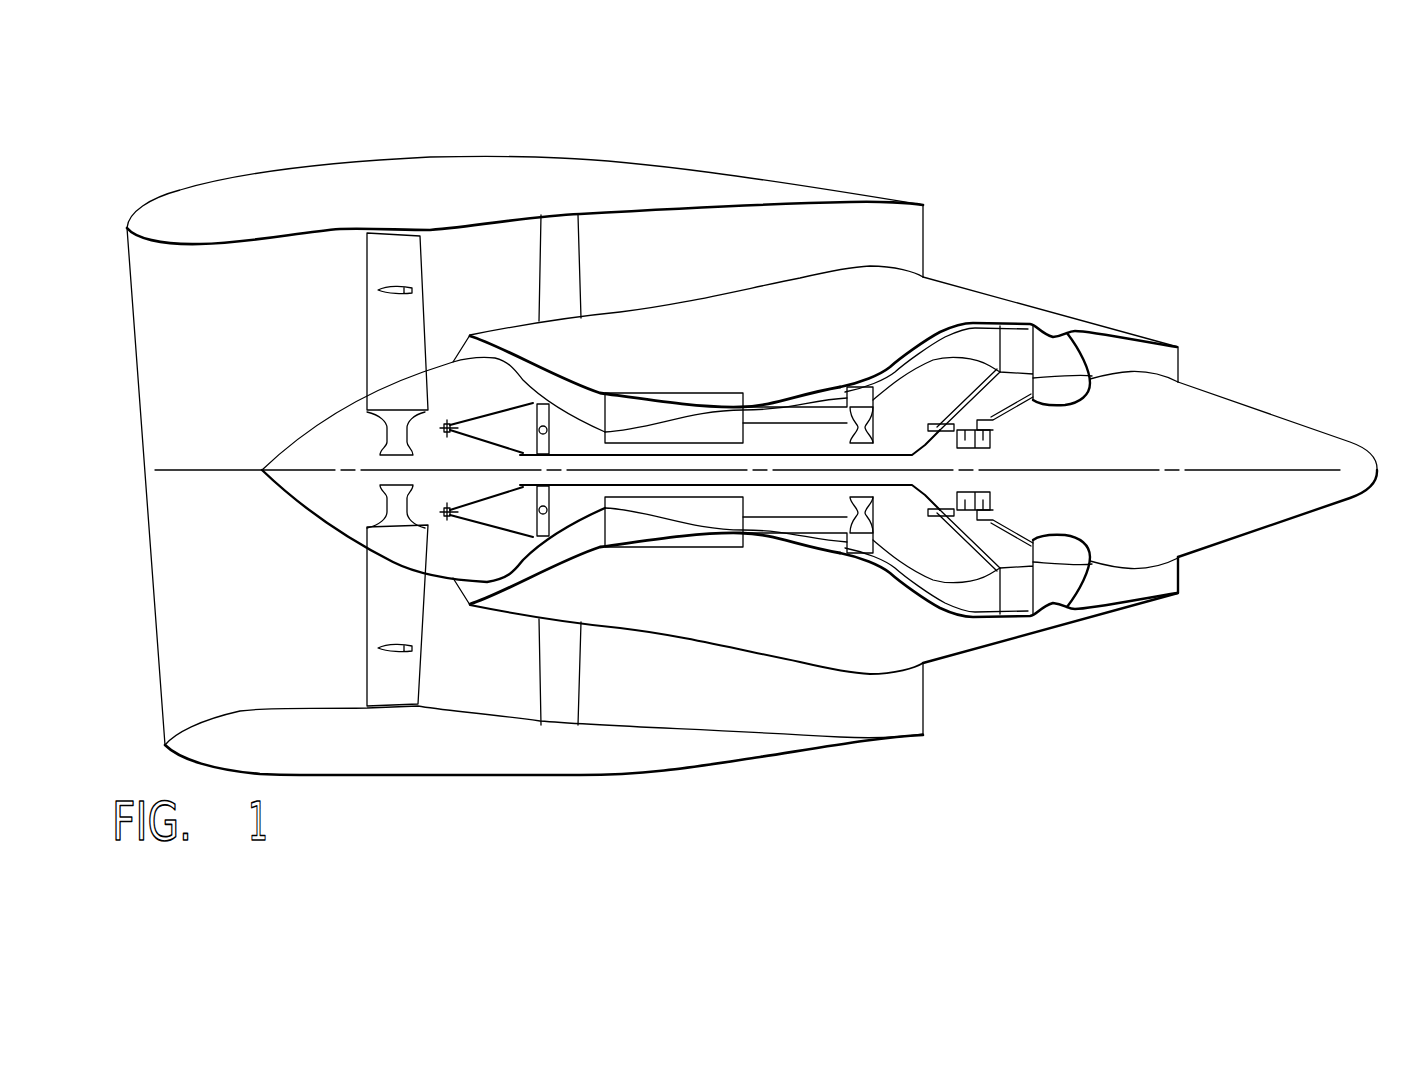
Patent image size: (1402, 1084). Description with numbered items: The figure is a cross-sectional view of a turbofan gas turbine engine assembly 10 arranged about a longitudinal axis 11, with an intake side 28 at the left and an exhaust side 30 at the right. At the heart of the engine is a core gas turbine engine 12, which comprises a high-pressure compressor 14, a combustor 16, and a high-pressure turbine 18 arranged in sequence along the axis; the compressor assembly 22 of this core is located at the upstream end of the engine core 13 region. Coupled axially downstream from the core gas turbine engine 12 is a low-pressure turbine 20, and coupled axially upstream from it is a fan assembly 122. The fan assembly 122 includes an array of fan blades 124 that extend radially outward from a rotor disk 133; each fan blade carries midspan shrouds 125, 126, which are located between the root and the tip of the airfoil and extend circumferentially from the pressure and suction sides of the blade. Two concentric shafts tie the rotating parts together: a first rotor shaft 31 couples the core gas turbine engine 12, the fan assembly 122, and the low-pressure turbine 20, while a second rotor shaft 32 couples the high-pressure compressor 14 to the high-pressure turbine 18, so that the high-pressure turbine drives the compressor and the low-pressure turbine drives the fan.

The gas turbine engine assembly 10 is at (815, 125).
The longitudinal axis 11 is at (185, 468).
The core gas turbine engine 12 is at (716, 348).
The core engine 13 is at (806, 300).
The high-pressure compressor 14 is at (628, 407).
The combustor 16 is at (815, 407).
The high-pressure turbine 18 is at (863, 400).
The low-pressure turbine 20 is at (958, 343).
The compressor assembly 22 is at (605, 407).
The intake side 28 is at (105, 262).
The exhaust side 30 is at (968, 220).
The first rotor shaft 31 is at (680, 490).
The second rotor shaft 32 is at (818, 520).
The fan assembly 122 is at (285, 352).
The fan blades 124 is at (390, 334).
The midspan shroud 125 is at (384, 286).
The midspan shroud 126 is at (400, 652).
The rotor disk 133 is at (388, 444).